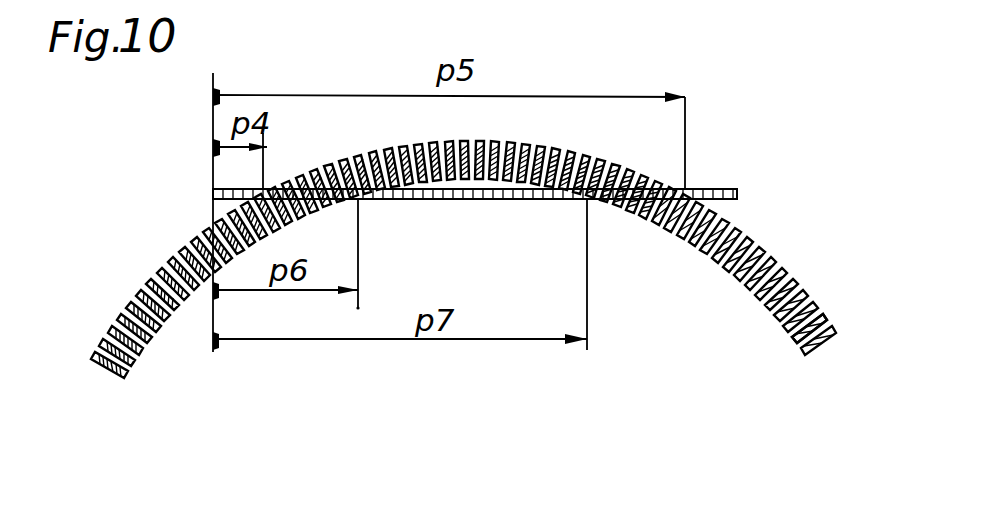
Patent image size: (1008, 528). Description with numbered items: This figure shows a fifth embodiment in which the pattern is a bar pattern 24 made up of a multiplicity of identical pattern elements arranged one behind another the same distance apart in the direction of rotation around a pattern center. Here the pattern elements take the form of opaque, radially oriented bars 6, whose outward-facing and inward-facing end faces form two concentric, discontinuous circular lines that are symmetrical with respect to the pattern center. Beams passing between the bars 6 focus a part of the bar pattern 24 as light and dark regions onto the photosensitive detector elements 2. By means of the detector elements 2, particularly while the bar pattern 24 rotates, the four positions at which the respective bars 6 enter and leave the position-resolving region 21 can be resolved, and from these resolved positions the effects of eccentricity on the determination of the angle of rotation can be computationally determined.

The photosensitive detector elements 2 is at (733, 189).
The position-resolving region 21 is at (757, 198).
The bars 6 is at (814, 347).
The bar pattern 24 is at (153, 346).